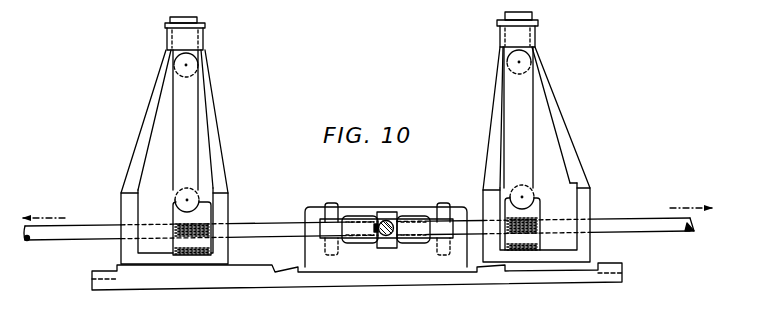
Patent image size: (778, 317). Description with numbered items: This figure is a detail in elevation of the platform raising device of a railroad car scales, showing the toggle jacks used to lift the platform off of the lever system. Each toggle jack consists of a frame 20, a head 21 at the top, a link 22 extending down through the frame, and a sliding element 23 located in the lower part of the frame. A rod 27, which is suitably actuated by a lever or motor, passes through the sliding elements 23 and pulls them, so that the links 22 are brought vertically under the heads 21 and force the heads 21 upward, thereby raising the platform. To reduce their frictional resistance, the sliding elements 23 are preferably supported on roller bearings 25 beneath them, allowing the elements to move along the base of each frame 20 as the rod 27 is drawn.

The frame 20 is at (140, 125).
The head 21 is at (167, 18).
The link 22 is at (537, 151).
The sliding element 23 is at (170, 205).
The roller bearings 25 is at (188, 254).
The rod 27 is at (72, 242).